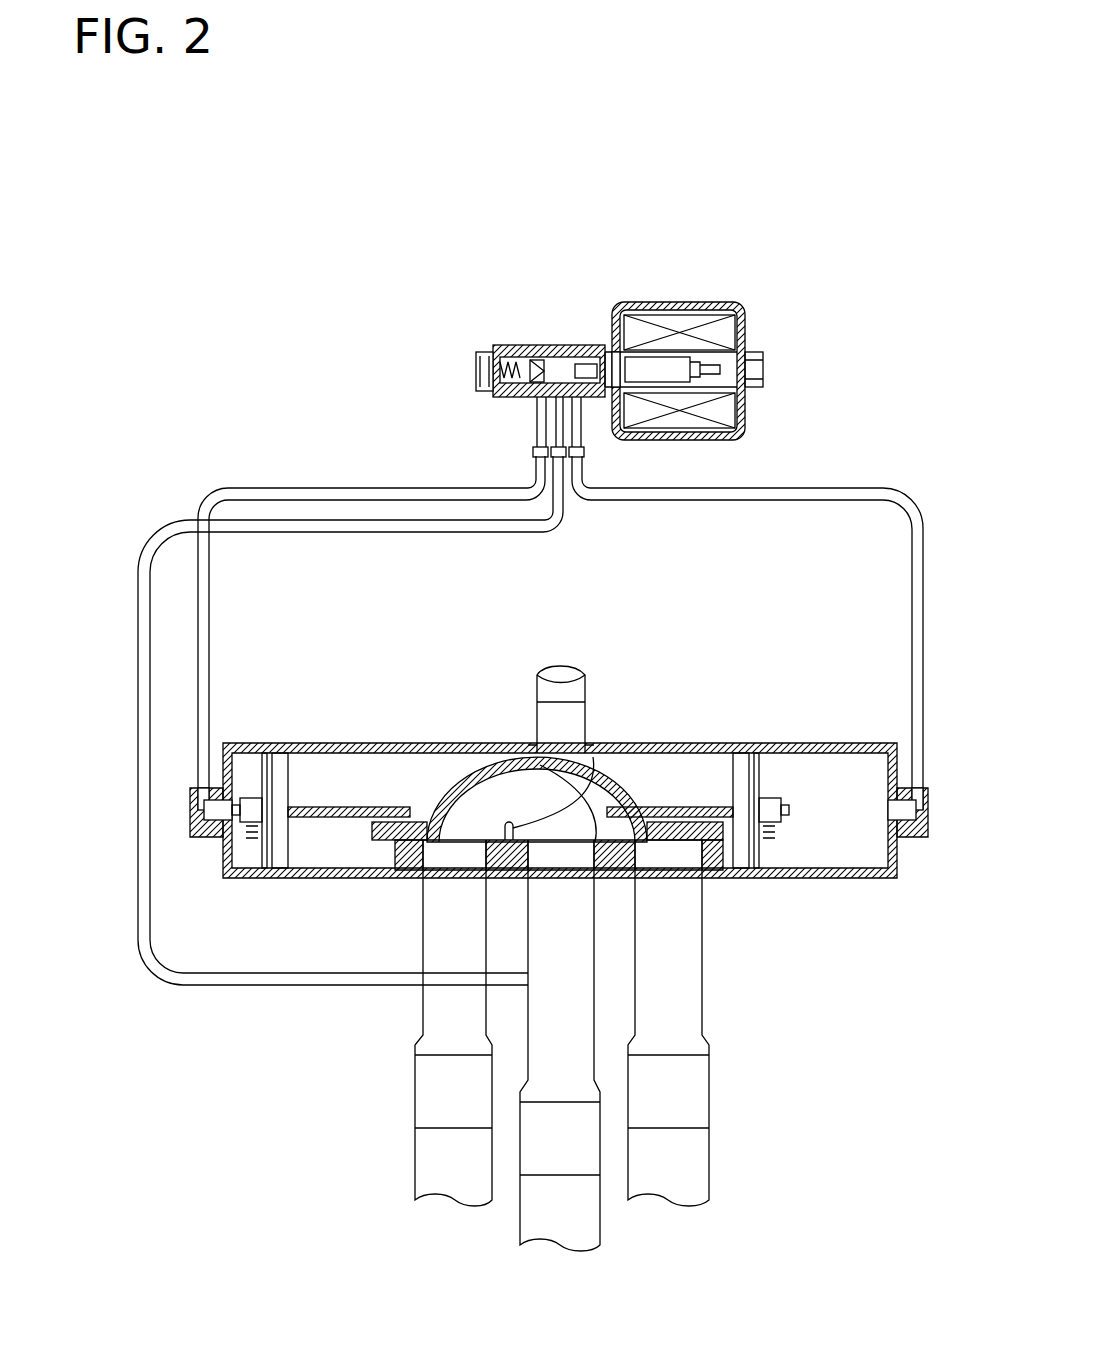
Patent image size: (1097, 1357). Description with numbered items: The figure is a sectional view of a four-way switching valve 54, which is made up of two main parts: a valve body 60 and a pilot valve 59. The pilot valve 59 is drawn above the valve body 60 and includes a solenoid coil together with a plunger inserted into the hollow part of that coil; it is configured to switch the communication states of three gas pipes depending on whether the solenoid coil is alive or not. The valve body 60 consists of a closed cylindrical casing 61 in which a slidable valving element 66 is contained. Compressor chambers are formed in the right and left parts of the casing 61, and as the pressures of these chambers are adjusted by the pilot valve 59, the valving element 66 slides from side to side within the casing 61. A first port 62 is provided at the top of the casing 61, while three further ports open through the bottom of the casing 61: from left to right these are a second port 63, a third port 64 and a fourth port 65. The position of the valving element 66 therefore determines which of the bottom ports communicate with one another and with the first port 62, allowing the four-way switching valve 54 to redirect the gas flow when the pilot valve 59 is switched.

The four-way switching valve 54 is at (288, 248).
The pilot valve 59 is at (503, 335).
The valve body 60 is at (318, 998).
The casing 61 is at (832, 878).
The first port 62 is at (586, 712).
The second port 63 is at (423, 912).
The third port 64 is at (594, 920).
The fourth port 65 is at (702, 975).
The valving element 66 is at (443, 780).